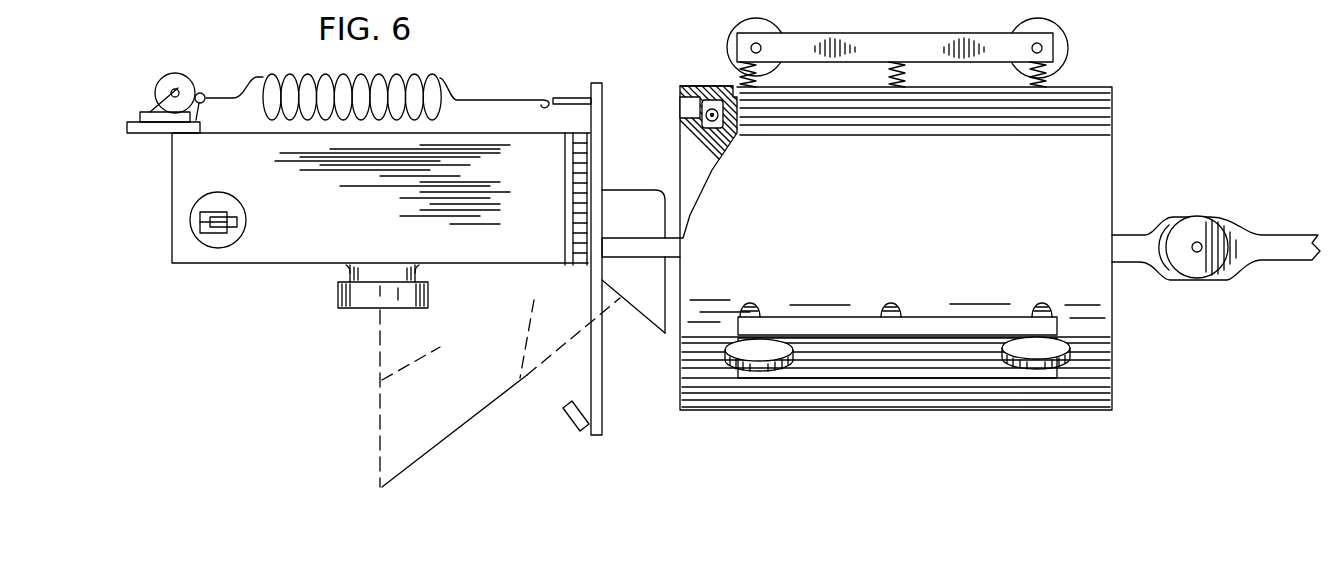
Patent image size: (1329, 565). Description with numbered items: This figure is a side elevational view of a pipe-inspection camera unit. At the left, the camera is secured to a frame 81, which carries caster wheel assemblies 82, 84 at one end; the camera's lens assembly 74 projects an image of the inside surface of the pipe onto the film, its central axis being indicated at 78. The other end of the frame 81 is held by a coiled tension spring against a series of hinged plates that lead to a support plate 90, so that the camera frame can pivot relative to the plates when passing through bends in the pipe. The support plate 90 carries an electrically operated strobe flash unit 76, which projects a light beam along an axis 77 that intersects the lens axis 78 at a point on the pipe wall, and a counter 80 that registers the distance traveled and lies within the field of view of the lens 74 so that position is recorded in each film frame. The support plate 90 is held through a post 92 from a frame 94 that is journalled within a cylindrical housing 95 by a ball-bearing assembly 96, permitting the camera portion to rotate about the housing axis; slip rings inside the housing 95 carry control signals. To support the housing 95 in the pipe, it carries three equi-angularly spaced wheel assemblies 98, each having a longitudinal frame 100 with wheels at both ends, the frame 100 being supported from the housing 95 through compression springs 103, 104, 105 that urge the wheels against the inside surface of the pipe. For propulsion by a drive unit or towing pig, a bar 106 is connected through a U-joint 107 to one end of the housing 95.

The lens assembly 74 is at (410, 293).
The strobe flash unit 76 is at (650, 186).
The axis 77 is at (533, 300).
The central axis of the lens 78 is at (453, 398).
The counter 80 is at (592, 412).
The frame 81 is at (268, 255).
The caster wheel assembly 82 is at (143, 107).
The caster wheel assembly 84 is at (244, 206).
The support plate 90 is at (627, 47).
The post 92 is at (425, 78).
The frame 94 is at (680, 133).
The cylindrical housing 95 is at (718, 83).
The ball-bearing assembly 96 is at (677, 88).
The wheel assembly 98 is at (1064, 312).
The frame 100 is at (878, 43).
The compression spring 103 is at (755, 78).
The compression spring 104 is at (898, 87).
The compression spring 105 is at (1040, 87).
The bar 106 is at (1263, 245).
The U-joint 107 is at (1208, 210).